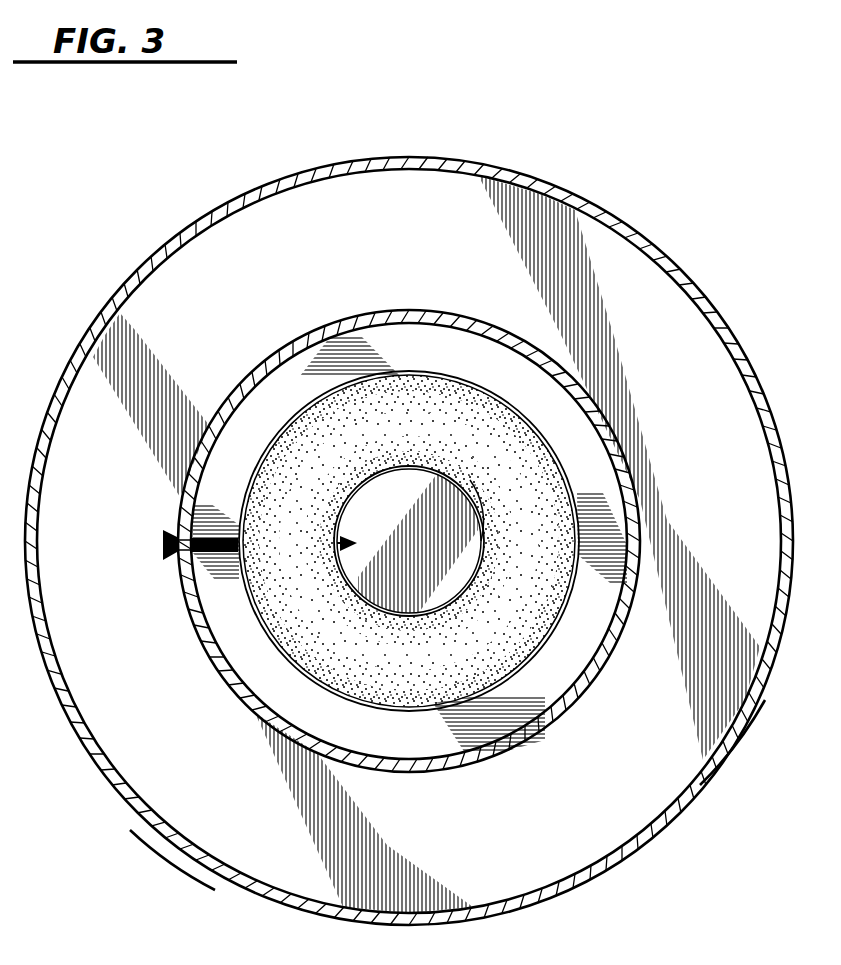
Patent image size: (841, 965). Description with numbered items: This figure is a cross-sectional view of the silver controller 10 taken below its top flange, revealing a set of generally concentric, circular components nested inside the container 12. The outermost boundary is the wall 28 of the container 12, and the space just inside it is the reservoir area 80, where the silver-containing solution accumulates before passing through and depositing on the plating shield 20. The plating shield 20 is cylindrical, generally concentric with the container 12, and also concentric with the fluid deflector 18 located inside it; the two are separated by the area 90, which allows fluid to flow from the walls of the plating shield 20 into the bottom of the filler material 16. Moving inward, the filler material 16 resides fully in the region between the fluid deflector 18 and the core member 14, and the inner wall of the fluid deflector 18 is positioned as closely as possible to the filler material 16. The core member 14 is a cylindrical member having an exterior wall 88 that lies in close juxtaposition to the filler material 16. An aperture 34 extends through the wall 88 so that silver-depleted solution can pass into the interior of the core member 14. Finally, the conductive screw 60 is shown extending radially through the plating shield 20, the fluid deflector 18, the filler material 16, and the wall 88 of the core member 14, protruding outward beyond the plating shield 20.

The silver controller 10 is at (636, 220).
The container 12 is at (707, 767).
The core member 14 is at (420, 556).
The filler material 16 is at (503, 437).
The fluid deflector 18 is at (295, 413).
The plating shield 20 is at (573, 383).
The wall 28 is at (187, 857).
The aperture 34 is at (482, 540).
The conductive screw 60 is at (163, 542).
The reservoir area 80 is at (428, 848).
The wall 88 is at (371, 483).
The area 90 is at (428, 748).